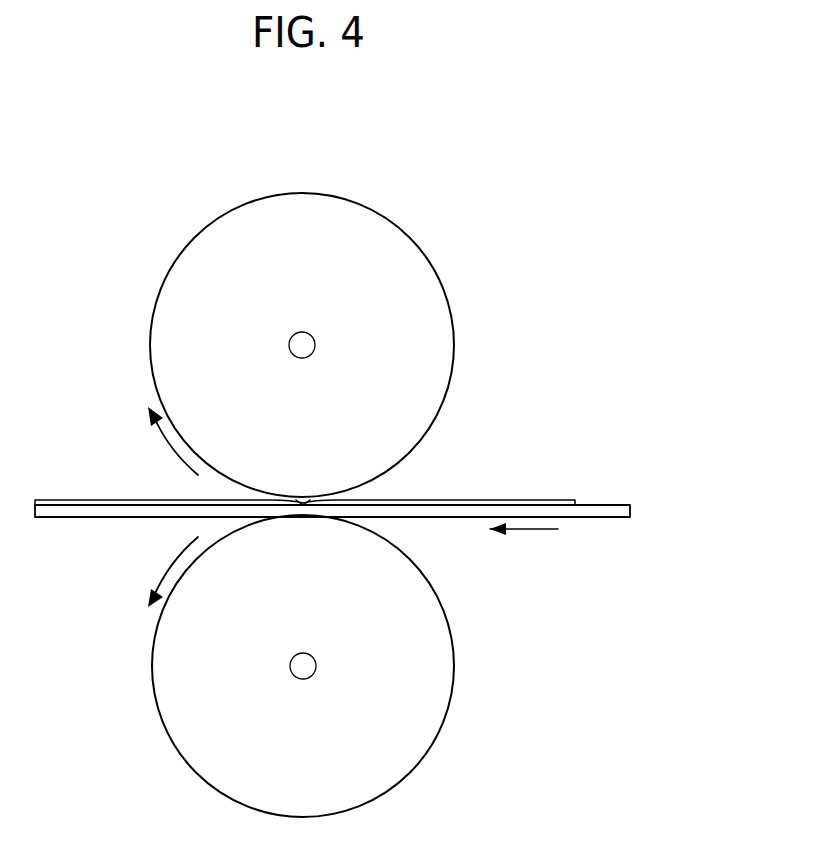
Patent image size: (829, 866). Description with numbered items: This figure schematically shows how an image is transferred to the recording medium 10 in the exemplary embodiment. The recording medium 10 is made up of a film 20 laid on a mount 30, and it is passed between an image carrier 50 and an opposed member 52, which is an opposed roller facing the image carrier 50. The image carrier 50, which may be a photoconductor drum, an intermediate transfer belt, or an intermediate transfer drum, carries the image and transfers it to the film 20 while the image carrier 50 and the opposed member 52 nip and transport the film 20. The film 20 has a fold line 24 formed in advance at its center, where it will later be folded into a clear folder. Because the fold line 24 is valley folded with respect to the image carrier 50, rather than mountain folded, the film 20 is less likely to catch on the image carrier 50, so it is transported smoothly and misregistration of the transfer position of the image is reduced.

The recording medium 10 is at (640, 446).
The film 20 is at (557, 494).
The fold line 24 is at (303, 498).
The mount 30 is at (591, 522).
The image carrier 50 is at (390, 243).
The opposed member 52 is at (393, 773).